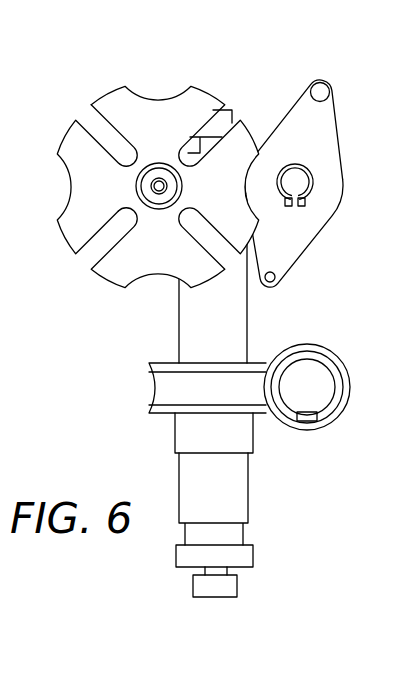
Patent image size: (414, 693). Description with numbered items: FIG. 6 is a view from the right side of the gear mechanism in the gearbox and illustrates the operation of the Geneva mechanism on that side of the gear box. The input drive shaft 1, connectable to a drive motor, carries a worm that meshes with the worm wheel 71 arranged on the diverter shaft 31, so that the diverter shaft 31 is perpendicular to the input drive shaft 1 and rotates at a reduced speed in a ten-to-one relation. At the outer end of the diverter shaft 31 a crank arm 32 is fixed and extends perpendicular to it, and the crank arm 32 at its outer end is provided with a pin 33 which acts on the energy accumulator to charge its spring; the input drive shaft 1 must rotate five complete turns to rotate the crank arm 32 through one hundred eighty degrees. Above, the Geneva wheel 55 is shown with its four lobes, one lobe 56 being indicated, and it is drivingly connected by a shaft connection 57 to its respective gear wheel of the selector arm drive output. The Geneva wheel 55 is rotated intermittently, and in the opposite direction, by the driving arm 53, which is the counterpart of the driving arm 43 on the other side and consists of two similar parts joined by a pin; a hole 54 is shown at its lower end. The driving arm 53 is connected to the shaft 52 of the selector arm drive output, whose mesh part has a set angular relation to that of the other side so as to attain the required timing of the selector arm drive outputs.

The input drive shaft 1 is at (307, 377).
The diverter shaft 31 is at (192, 317).
The crank arm 32 is at (245, 555).
The pin 33 is at (215, 585).
The driving arm 43 is at (311, 177).
The shaft 52 is at (292, 173).
The driving arm 53 is at (307, 223).
The pivot hole 54 is at (280, 279).
The Geneva wheel 55 is at (138, 159).
The lobe 56 is at (97, 138).
The shaft connection 57 is at (163, 182).
The worm wheel 71 is at (167, 387).